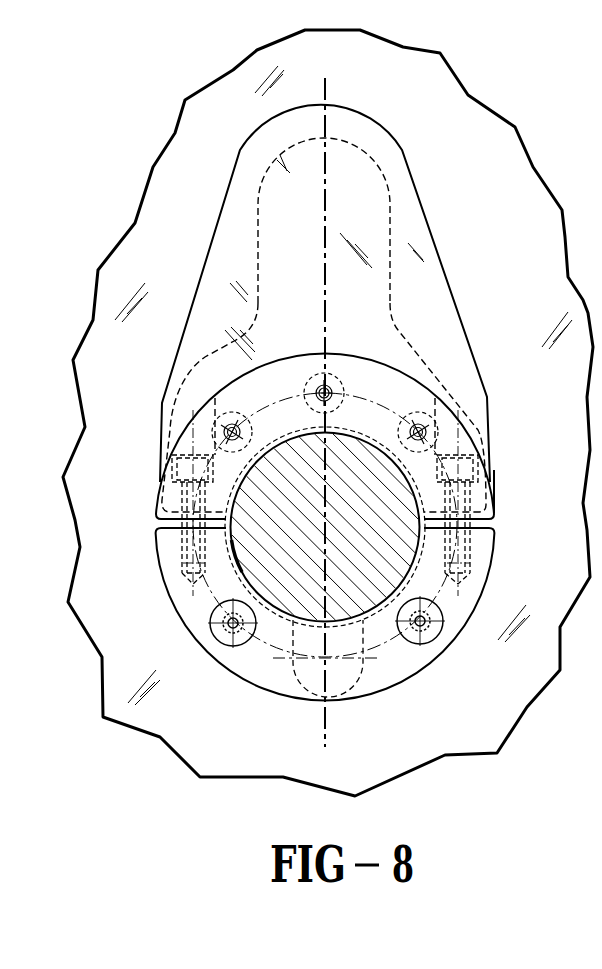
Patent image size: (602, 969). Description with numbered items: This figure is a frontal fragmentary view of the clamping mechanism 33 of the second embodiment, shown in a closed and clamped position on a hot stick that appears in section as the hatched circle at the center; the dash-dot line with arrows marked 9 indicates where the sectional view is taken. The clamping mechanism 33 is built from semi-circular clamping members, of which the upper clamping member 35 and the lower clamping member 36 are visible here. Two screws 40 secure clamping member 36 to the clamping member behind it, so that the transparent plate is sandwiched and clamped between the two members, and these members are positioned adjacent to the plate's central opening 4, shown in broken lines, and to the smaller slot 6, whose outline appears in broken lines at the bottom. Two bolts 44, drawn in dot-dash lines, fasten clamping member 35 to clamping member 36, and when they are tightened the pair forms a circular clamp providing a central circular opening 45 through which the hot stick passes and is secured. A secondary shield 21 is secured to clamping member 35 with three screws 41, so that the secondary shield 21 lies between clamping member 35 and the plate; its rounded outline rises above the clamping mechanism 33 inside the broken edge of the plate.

The central opening 4 is at (207, 355).
The slot 6 is at (283, 692).
The section line 9- 9 is at (350, 747).
The secondary shield 21 is at (433, 224).
The clamping mechanism 33 is at (392, 362).
The clamping member 35 is at (494, 501).
The clamping member 36 is at (490, 562).
The screws 40 is at (220, 637).
The screws 41 is at (307, 380).
The bolts 44 is at (187, 453).
The central circular opening 45 is at (235, 552).